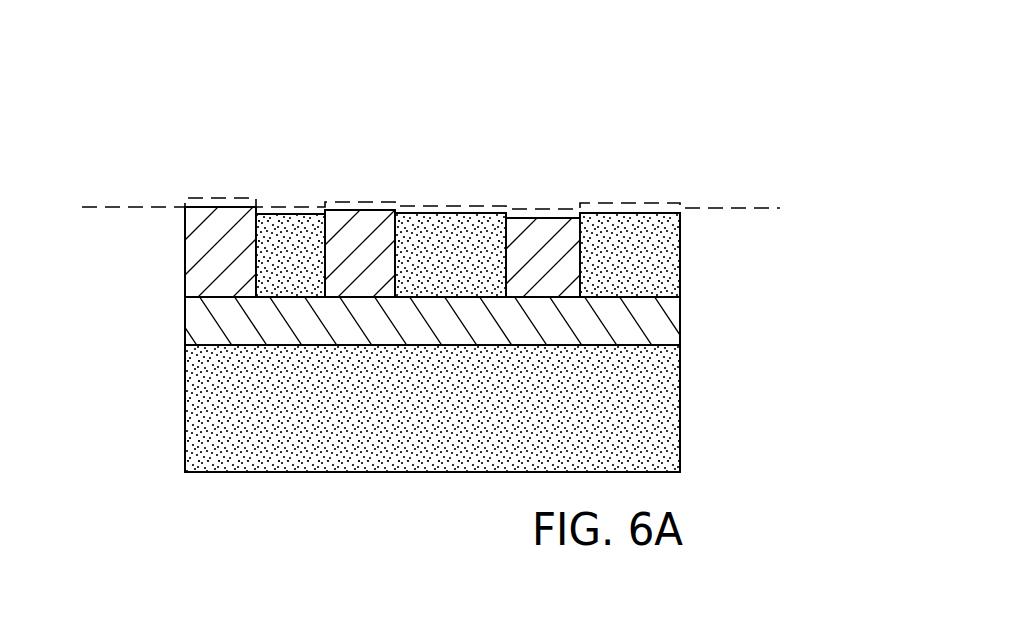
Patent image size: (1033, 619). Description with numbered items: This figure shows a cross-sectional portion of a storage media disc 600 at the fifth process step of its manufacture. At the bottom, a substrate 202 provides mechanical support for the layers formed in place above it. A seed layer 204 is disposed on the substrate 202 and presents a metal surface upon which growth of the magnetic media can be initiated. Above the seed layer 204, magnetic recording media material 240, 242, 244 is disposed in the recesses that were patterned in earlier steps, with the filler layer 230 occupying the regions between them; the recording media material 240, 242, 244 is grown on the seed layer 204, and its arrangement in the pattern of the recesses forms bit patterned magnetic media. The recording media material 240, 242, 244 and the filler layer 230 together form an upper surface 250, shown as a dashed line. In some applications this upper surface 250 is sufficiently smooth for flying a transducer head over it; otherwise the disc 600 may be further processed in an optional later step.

The disc 600 is at (530, 79).
The substrate 202 is at (680, 395).
The seed layer 204 is at (680, 313).
The filler layer 230 is at (278, 212).
The magnetic recording media material 240 is at (537, 218).
The magnetic recording media material 242 is at (382, 210).
The magnetic recording media material 244 is at (186, 207).
The upper surface 250 is at (135, 207).